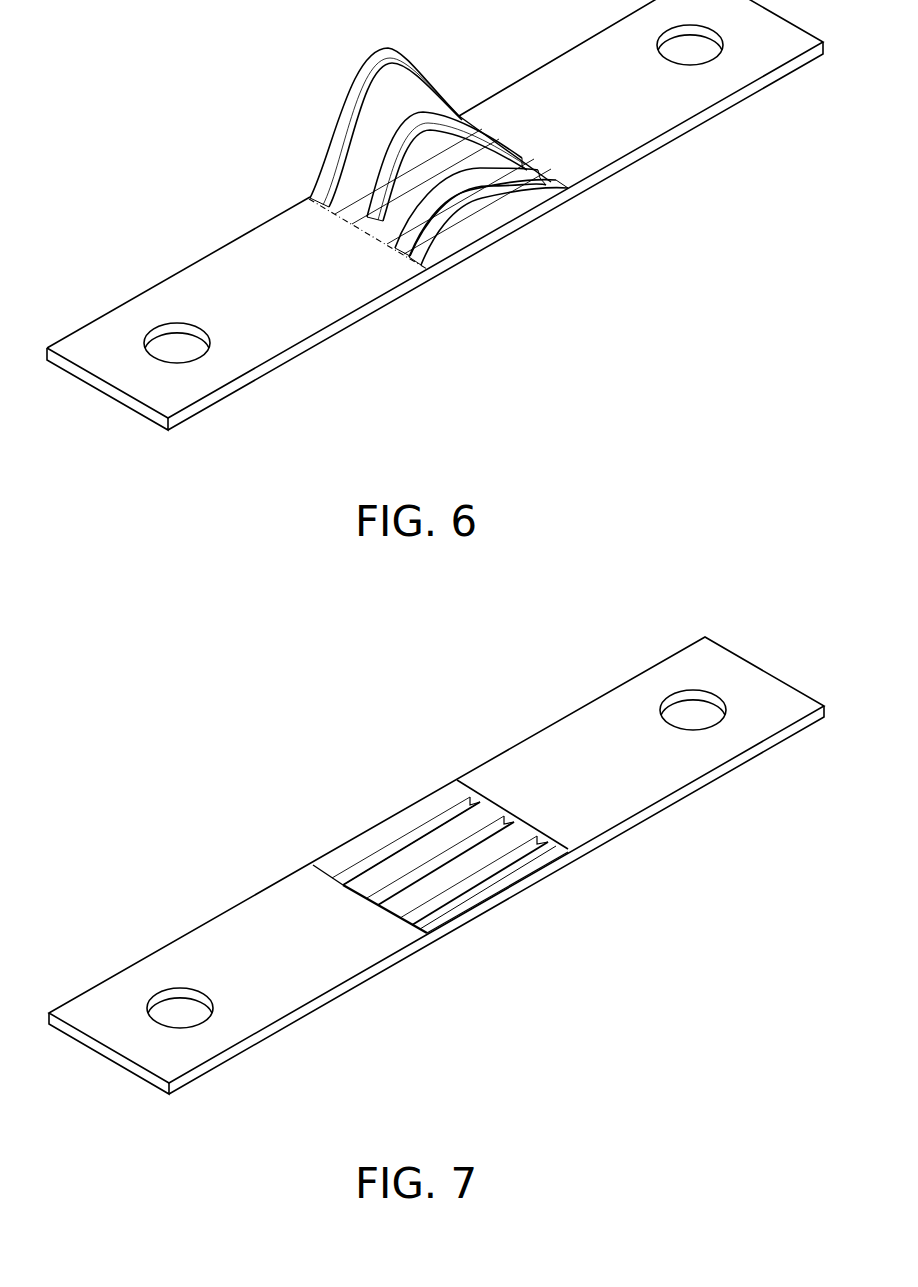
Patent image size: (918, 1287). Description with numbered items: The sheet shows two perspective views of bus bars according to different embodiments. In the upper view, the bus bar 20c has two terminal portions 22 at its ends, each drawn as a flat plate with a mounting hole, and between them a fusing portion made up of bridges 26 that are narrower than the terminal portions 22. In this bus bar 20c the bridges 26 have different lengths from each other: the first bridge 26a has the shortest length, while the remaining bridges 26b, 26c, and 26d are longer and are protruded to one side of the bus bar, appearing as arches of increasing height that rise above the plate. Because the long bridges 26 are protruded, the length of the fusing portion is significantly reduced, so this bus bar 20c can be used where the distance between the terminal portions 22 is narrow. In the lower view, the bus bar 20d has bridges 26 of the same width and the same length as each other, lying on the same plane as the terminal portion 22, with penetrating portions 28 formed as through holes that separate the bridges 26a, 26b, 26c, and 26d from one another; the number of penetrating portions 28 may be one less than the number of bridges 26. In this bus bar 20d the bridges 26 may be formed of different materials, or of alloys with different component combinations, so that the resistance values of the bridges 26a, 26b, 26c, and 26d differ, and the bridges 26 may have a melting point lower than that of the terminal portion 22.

In FIG. 6, the bus bar 20c is at (230, 35).
In FIG. 7, the bus bar 20d is at (233, 700).
In FIG. 6, the terminal portion 22 is at (645, 127).
In FIG. 7, the terminal portion 22 is at (643, 788).
In FIG. 6, the bridges 26 is at (656, 238).
In FIG. 7, the bridges 26 is at (653, 899).
In FIG. 6, the first bridge 26a is at (432, 253).
In FIG. 7, the first bridge 26a is at (437, 913).
In FIG. 6, the second bridge 26b is at (427, 190).
In FIG. 7, the second bridge 26b is at (438, 875).
In FIG. 6, the third bridge 26c is at (437, 132).
In FIG. 7, the third bridge 26c is at (443, 833).
In FIG. 6, the fourth bridge 26d is at (400, 52).
In FIG. 7, the fourth bridge 26d is at (437, 802).
In FIG. 7, the penetrating portion 28 is at (362, 867).